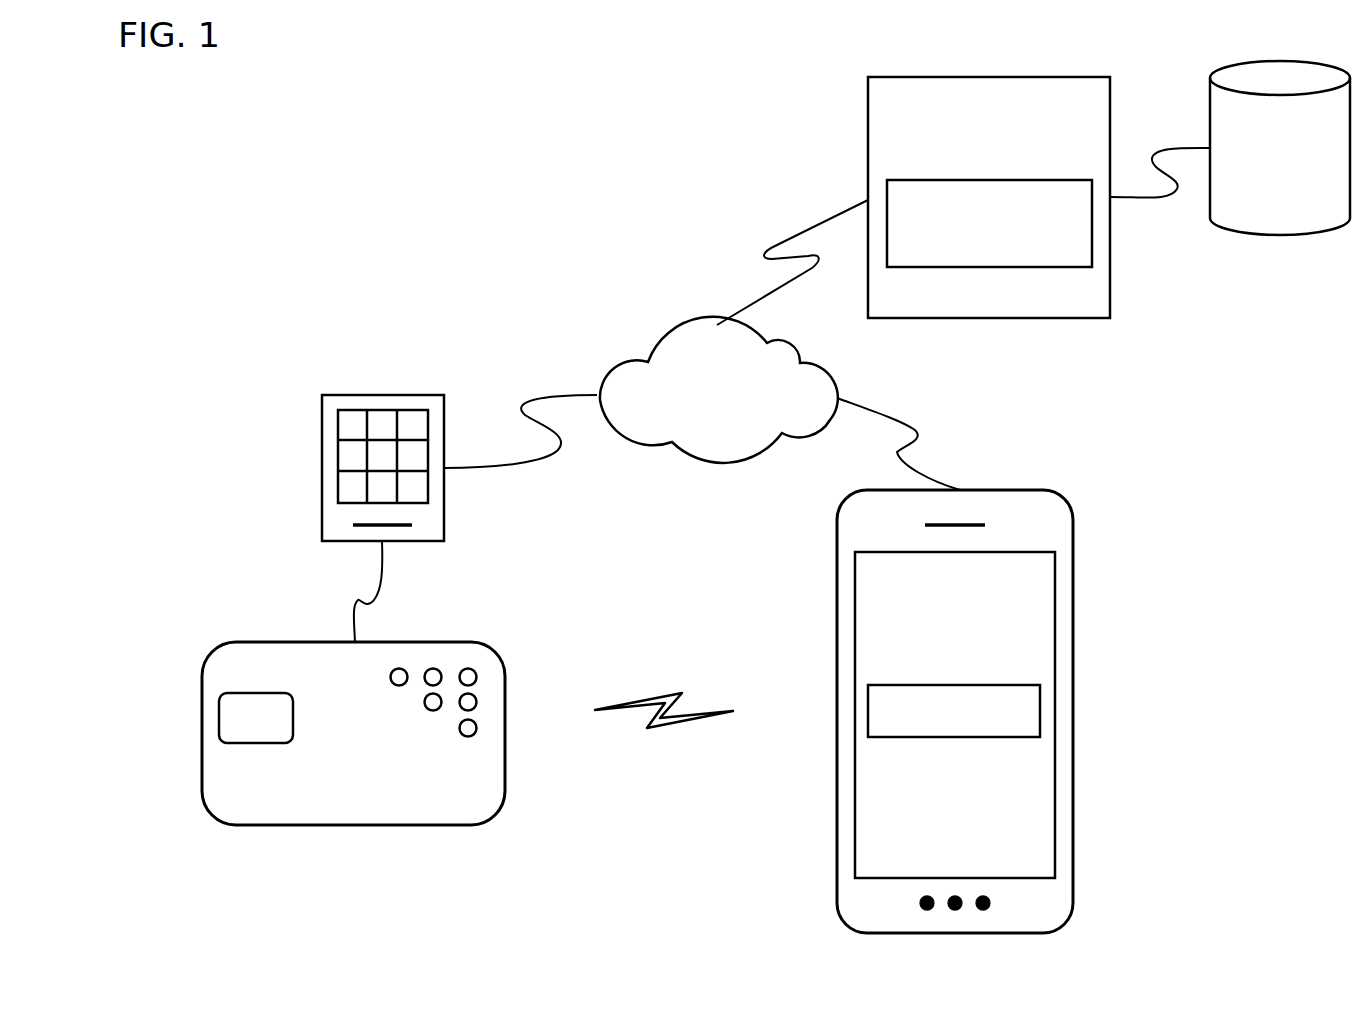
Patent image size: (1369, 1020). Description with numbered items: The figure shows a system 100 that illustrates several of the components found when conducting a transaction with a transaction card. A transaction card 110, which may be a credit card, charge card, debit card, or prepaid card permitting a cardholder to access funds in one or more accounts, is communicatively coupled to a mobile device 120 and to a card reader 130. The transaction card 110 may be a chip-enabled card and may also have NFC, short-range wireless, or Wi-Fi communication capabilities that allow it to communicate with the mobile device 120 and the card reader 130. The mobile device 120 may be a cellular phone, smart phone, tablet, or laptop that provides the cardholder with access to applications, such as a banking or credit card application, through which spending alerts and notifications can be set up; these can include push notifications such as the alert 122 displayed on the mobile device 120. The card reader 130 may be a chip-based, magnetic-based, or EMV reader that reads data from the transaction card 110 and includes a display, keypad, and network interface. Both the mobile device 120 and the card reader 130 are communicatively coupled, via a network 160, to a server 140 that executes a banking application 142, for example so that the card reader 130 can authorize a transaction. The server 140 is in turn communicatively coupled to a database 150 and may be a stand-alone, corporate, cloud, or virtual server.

The system 100 is at (278, 237).
The transaction card 110 is at (202, 735).
The mobile device 120 is at (997, 490).
The alert 122 is at (1040, 710).
The card reader 130 is at (322, 468).
The server 140 is at (989, 197).
The banking application 142 is at (989, 223).
The database 150 is at (1230, 148).
The network 160 is at (702, 345).